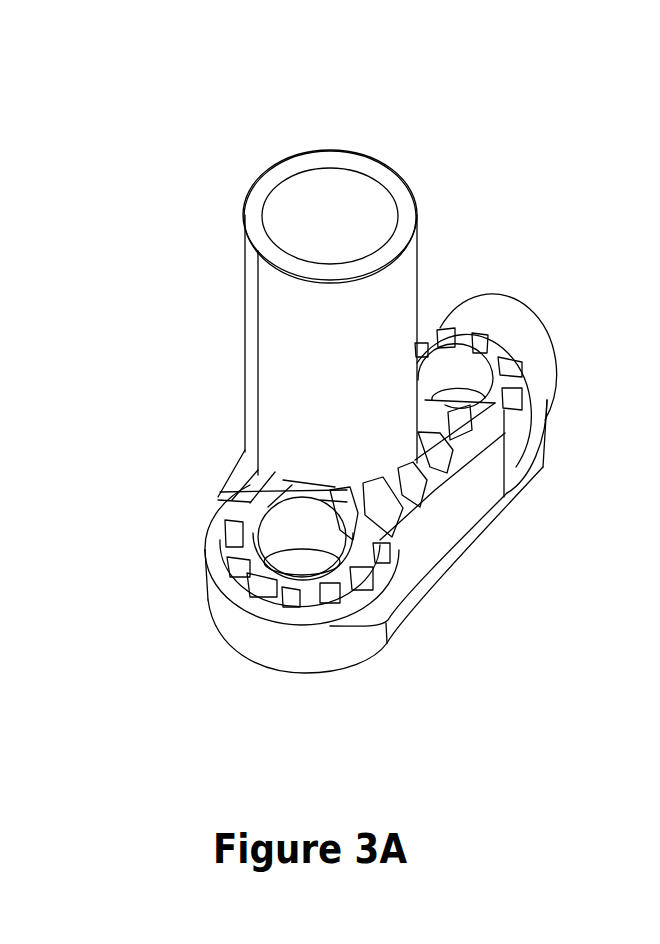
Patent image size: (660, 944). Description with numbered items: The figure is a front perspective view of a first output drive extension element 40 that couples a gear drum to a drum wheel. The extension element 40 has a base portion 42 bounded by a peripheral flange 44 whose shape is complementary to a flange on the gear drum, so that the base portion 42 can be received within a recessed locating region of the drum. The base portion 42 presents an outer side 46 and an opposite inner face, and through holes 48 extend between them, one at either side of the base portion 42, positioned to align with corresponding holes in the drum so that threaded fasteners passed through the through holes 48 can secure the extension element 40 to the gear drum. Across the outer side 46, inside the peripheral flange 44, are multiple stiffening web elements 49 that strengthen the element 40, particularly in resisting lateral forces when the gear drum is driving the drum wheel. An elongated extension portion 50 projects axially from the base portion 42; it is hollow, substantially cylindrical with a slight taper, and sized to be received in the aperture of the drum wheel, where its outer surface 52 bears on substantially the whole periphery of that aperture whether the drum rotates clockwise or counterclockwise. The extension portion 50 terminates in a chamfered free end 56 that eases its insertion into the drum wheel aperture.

The first output drive extension element 40 is at (456, 166).
The base portion 42 is at (538, 364).
The peripheral flange 44 is at (442, 537).
The outer side 46 is at (502, 352).
The through holes 48 is at (298, 567).
The stiffening web elements 49 is at (250, 572).
The elongated extension portion 50 is at (306, 356).
The outer surface 52 is at (244, 273).
The chamfered free end 56 is at (250, 204).